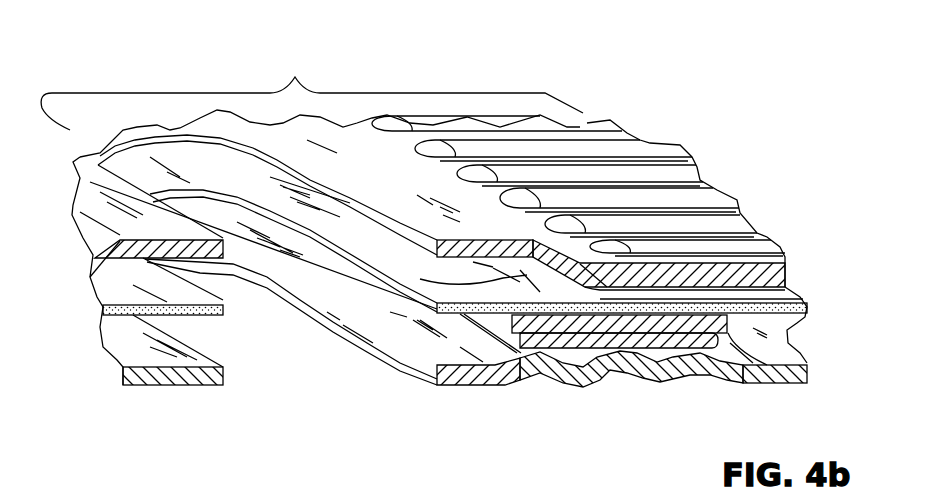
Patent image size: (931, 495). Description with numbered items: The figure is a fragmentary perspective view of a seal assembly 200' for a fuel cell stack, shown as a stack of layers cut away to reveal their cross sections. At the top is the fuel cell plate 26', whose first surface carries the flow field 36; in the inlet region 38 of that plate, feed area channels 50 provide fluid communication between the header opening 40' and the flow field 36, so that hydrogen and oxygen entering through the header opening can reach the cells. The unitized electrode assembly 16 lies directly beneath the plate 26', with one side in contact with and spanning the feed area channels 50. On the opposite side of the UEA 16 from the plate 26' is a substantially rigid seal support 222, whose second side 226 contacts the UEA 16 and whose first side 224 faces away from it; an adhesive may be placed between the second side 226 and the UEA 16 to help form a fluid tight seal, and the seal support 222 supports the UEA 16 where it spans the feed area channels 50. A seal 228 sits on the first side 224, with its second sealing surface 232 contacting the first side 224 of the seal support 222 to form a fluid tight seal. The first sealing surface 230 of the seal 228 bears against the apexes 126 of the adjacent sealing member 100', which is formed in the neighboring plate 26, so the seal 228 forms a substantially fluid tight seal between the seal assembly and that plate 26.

The inlet region 38 is at (295, 77).
The flow field 36 is at (625, 168).
The feed area channels 50 is at (310, 234).
The fuel cell plate 26' is at (810, 217).
The unitized electrode assembly 16 is at (807, 308).
The plate 26 is at (796, 350).
The header opening 40' is at (156, 313).
The seal assembly 200' is at (429, 392).
The apexes 126 is at (512, 380).
The sealing member 100' is at (628, 410).
The seal 228 is at (575, 350).
The first sealing surface 230 is at (660, 345).
The second sealing surface 232 is at (648, 340).
The seal support 222 is at (680, 345).
The first side 224 is at (705, 348).
The second side 226 is at (712, 352).